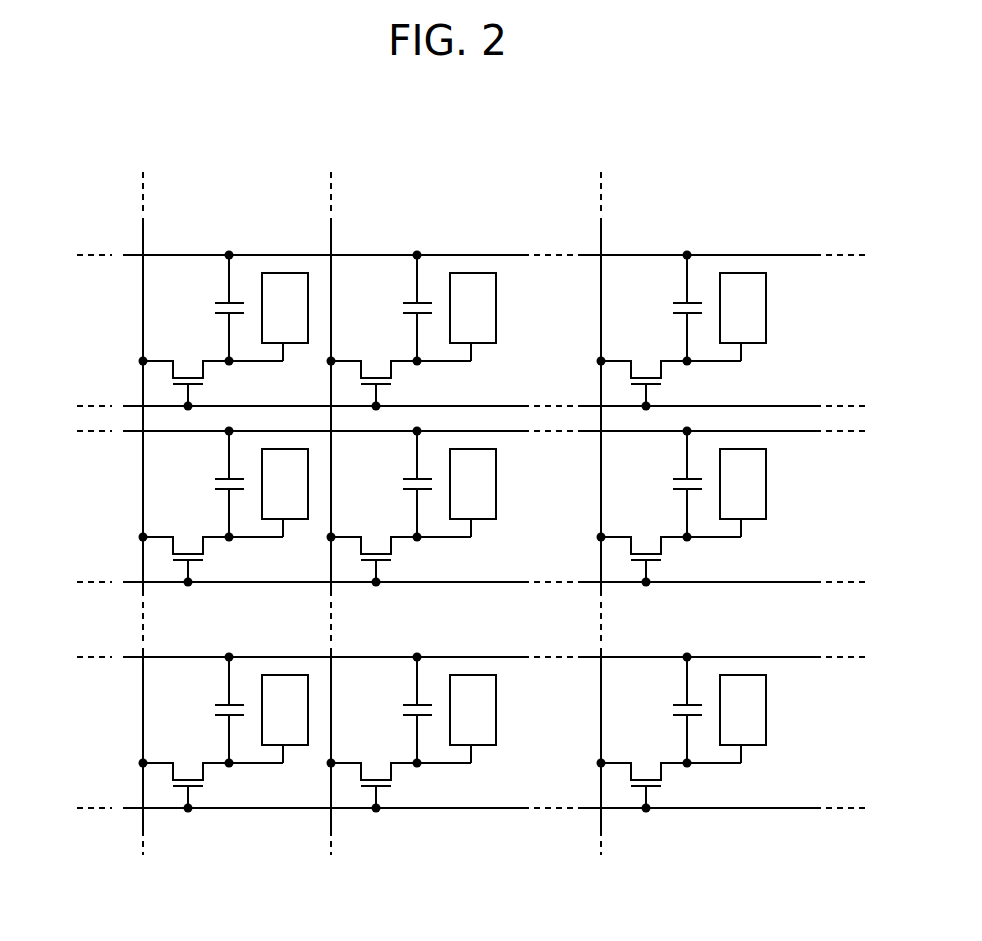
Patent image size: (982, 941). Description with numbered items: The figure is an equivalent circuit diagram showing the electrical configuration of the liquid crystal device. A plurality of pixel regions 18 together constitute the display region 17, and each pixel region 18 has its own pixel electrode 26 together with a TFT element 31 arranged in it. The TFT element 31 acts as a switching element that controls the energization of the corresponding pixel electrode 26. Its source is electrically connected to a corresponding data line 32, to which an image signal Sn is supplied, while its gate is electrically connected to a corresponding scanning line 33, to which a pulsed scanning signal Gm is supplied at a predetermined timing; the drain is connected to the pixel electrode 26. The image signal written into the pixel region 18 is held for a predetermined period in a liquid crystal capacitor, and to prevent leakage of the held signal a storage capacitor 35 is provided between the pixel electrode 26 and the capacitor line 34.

The display region 17 is at (730, 120).
The pixel region 18 is at (514, 301).
The pixel electrode 26 is at (308, 327).
The TFT element 31 is at (216, 389).
The data line 32 is at (143, 237).
The scanning line 33 is at (793, 405).
The capacitor line 34 is at (778, 256).
The storage capacitor 35 is at (204, 302).